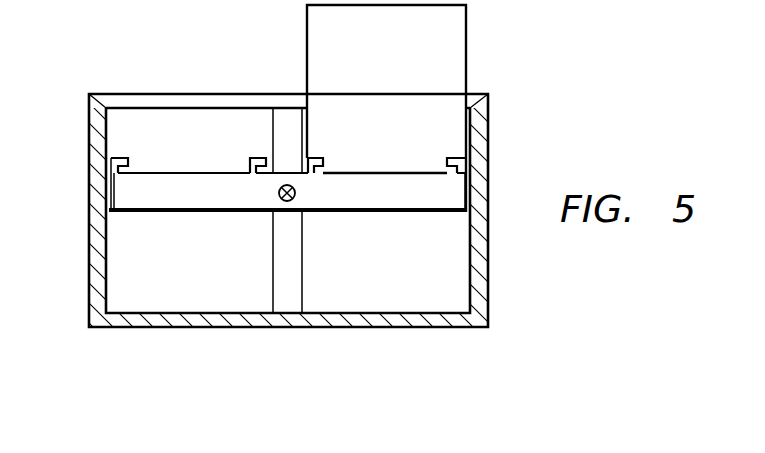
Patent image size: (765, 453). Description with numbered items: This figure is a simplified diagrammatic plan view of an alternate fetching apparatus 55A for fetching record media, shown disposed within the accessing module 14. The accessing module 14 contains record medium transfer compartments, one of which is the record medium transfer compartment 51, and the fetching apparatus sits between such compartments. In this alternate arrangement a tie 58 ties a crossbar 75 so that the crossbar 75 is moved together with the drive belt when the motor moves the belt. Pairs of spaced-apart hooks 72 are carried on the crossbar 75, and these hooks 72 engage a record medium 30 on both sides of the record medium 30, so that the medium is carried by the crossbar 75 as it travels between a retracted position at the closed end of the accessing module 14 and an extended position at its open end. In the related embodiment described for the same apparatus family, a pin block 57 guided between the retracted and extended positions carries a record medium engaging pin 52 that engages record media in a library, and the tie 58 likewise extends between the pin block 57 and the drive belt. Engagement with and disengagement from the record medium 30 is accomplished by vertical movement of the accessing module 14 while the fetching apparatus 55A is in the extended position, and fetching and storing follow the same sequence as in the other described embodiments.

The accessing module 14 is at (90, 217).
The record medium 30 is at (399, 91).
The record medium transfer compartment 51 is at (202, 286).
The record medium engaging pin 52 is at (400, 276).
The alternate fetching apparatus 55A is at (241, 227).
The pin block 57 is at (435, 165).
The tie 58 is at (278, 193).
The hooks 72 is at (120, 157).
The crossbar 75 is at (336, 208).